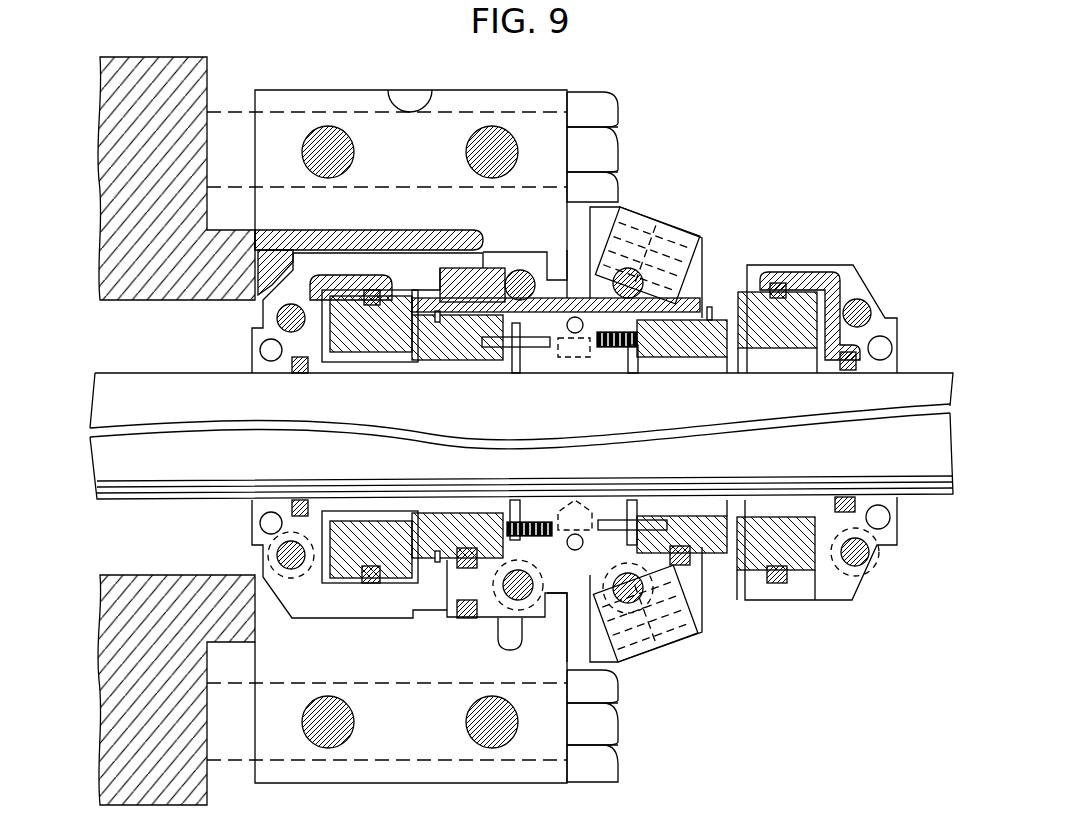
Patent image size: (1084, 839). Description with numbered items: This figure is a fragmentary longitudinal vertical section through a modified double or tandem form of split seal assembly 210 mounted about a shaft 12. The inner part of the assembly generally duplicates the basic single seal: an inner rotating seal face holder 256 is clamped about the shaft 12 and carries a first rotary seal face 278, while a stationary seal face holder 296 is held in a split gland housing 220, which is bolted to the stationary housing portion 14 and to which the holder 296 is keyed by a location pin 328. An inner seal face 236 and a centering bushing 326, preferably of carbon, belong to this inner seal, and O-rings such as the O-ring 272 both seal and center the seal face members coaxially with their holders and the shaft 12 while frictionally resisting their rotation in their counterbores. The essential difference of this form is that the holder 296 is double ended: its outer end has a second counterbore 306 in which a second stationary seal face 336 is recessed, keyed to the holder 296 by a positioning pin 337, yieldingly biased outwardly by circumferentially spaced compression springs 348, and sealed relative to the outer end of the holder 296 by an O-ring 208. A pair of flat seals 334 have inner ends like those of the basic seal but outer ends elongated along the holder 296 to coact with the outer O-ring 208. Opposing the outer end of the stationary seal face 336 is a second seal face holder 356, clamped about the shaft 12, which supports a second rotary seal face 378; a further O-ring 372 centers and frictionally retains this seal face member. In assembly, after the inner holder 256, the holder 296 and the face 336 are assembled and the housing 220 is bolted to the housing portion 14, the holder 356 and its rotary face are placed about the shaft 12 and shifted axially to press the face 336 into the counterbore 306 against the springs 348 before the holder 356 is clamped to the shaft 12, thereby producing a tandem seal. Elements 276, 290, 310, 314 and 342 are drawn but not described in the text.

The shaft 12 is at (926, 453).
The stationary housing portion 14 is at (135, 292).
The O-ring 208 is at (700, 300).
The split seal assembly 210 is at (628, 198).
The split gland housing 220 is at (457, 78).
The seal face 236 is at (447, 362).
The holder 256 is at (305, 270).
The O-ring 272 is at (368, 582).
The O-ring 276 is at (300, 500).
The rotary seal face 278 is at (345, 298).
The flange housing 290 is at (260, 350).
The stationary seal face holder 296 is at (500, 266).
The counterbore 306 is at (655, 293).
The pin 310 is at (465, 548).
The seal ring 314 is at (470, 598).
The centering bushing 326 is at (570, 358).
The location pin 328 is at (508, 632).
The flat seals 334 is at (560, 297).
The stationary seal face 336 is at (695, 572).
The positioning pin 337 is at (625, 518).
The ring 342 is at (466, 568).
The compression springs 348 is at (590, 300).
The seal face holder 356 is at (845, 270).
The O-ring 372 is at (777, 585).
The rotary seal face 378 is at (797, 298).